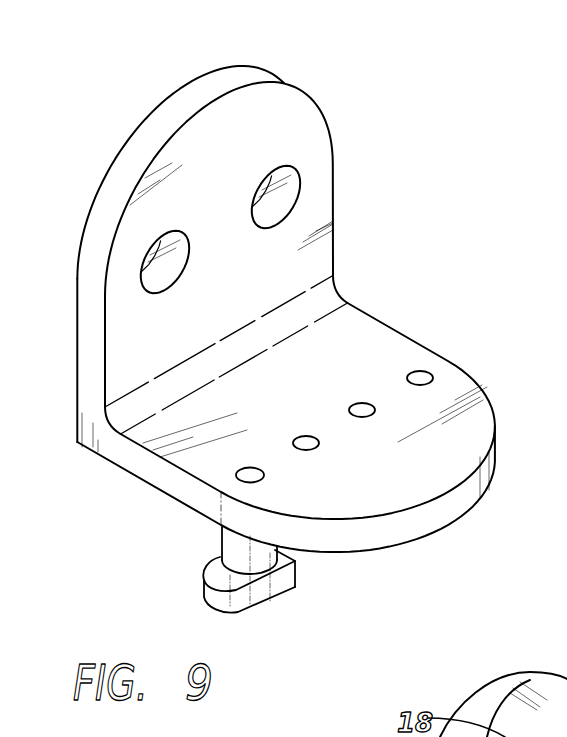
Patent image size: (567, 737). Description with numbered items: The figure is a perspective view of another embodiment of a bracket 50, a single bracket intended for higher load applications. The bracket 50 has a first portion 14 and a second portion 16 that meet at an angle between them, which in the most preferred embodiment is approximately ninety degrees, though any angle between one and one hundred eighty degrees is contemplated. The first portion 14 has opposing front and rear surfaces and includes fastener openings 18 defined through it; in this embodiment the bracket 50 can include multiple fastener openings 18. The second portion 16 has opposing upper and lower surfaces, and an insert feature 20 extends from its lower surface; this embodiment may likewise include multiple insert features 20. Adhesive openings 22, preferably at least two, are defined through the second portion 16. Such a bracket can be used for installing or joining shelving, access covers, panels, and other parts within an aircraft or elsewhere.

The first portion 14 is at (233, 118).
The second portion 16 is at (487, 474).
The fastener opening 18 is at (156, 266).
The insert feature 20 is at (181, 561).
The adhesive opening 22 is at (362, 410).
The bracket 50 is at (283, 308).